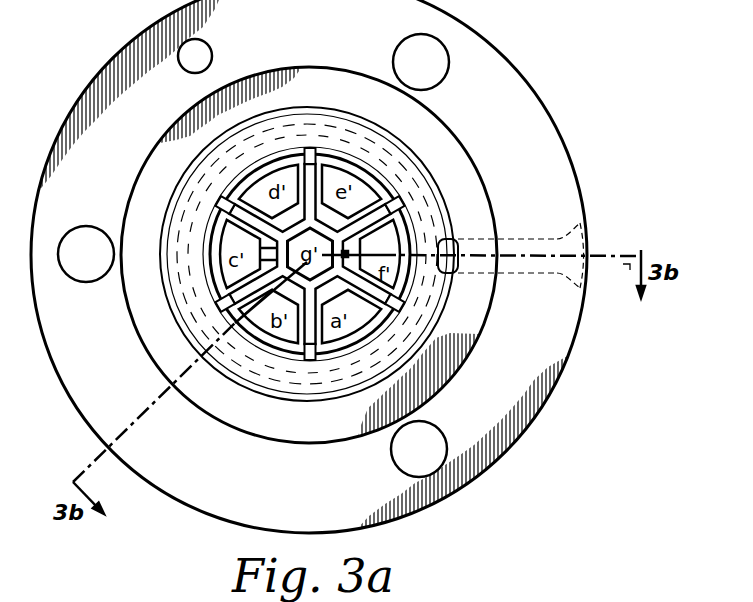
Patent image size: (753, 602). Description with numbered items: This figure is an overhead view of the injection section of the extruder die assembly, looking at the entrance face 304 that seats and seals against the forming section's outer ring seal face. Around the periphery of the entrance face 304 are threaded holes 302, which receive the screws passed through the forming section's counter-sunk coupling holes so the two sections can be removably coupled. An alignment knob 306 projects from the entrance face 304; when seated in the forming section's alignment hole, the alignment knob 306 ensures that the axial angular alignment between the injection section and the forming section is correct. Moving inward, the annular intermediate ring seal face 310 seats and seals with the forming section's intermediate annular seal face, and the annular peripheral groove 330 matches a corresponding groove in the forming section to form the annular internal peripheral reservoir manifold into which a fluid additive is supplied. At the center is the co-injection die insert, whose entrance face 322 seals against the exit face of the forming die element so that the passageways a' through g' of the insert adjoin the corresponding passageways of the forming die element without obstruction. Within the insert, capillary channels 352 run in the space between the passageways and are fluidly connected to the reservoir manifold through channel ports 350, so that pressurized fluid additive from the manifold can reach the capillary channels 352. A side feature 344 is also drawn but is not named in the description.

The threaded holes 302 is at (442, 56).
The entrance face 304 is at (528, 97).
The alignment knob 306 is at (208, 45).
The annular intermediate ring seal face 310 is at (330, 67).
The entrance face of co-injection die insert 322 is at (405, 232).
The annular peripheral groove 330 is at (272, 392).
The side port / fitting 344 is at (447, 230).
The channel ports 350 is at (222, 312).
The capillary channels 352 is at (386, 214).